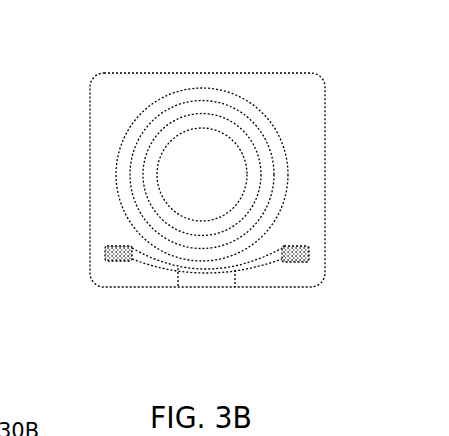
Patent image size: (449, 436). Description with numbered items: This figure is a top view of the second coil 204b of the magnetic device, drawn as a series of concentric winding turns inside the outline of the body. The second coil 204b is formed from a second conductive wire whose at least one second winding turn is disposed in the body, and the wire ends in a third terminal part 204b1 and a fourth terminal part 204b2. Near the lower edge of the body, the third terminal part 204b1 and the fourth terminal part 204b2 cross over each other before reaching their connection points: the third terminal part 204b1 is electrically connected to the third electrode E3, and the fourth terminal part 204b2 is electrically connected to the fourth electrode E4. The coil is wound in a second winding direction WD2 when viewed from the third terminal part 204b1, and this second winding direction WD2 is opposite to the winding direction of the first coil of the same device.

The second coil 204b is at (116, 140).
The third terminal part 204b1 is at (132, 263).
The fourth terminal part 204b2 is at (278, 264).
The second winding direction WD2 is at (148, 268).
The third electrode E3 is at (158, 282).
The fourth electrode E4 is at (248, 285).